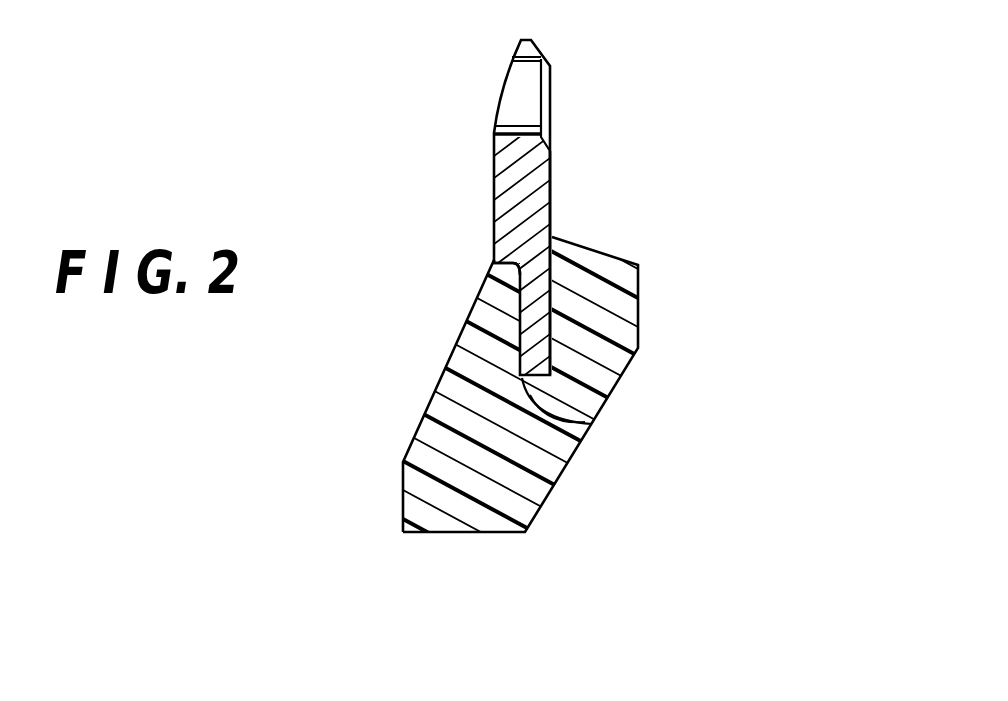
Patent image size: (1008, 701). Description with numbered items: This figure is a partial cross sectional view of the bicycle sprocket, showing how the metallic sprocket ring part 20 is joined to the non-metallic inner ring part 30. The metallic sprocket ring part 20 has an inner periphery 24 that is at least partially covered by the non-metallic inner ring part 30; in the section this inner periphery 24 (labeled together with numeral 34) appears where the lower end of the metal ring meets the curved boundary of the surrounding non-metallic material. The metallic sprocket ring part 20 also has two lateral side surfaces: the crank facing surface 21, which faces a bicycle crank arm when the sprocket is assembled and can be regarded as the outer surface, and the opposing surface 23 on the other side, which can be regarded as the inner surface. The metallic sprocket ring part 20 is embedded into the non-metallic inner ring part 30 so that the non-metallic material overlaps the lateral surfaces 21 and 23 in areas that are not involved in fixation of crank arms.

The metallic sprocket ring part 20 is at (551, 112).
The crank facing surface 21 is at (552, 189).
The opposing surface 23 is at (494, 151).
The inner periphery 24 is at (669, 414).
The cut groove 34 is at (590, 425).
The non-metallic inner ring part 30 is at (423, 483).